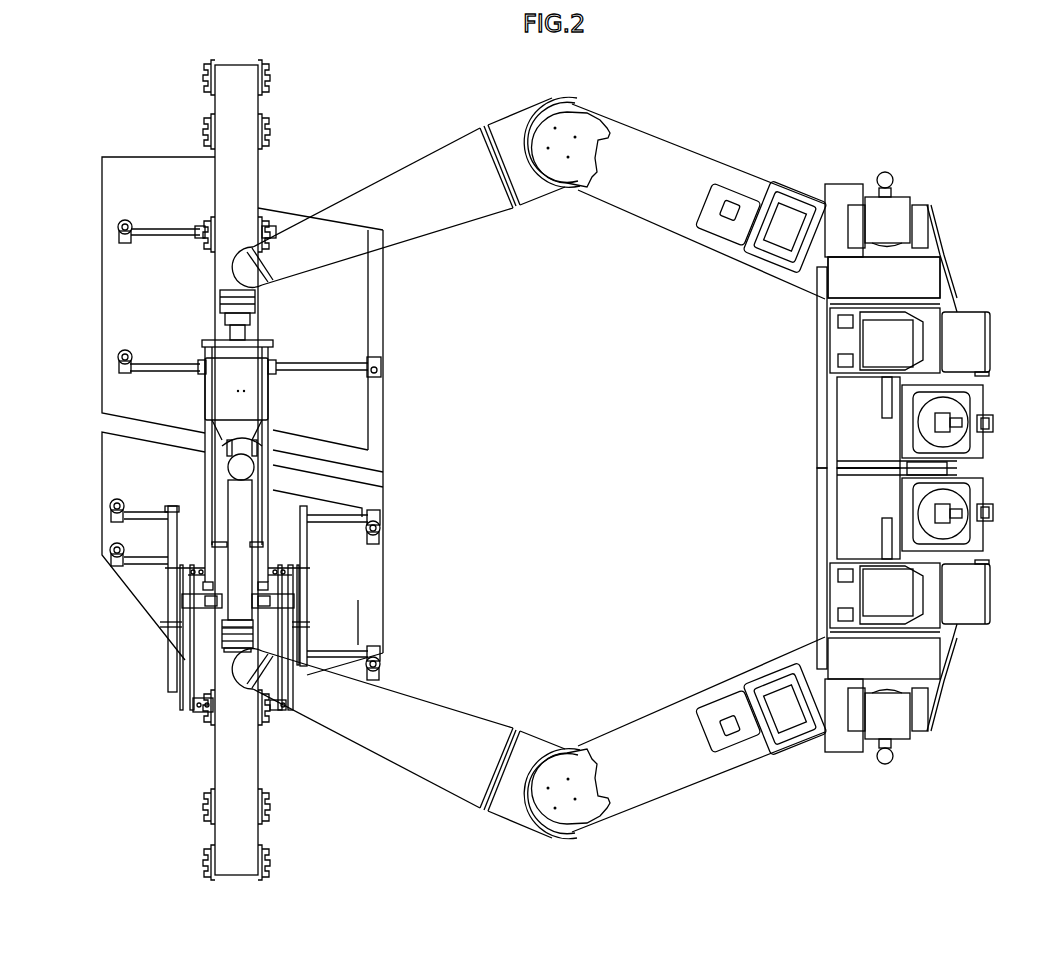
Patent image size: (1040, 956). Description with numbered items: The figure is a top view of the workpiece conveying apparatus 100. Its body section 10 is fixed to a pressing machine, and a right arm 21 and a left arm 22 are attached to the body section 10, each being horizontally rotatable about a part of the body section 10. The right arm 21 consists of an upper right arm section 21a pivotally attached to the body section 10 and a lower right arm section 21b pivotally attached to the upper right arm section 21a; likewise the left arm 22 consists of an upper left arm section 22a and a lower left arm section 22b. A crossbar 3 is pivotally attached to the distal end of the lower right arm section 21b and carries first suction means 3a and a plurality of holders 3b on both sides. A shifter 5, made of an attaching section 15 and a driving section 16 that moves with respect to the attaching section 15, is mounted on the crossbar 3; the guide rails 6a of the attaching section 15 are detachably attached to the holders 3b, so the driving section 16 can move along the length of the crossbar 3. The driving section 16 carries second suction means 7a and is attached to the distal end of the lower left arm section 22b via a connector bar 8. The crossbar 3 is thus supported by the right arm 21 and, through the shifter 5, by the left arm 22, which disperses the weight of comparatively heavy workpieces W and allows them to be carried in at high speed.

The crossbar 3 is at (248, 178).
The first suction means 3a is at (117, 220).
The holders 3b is at (205, 225).
The workpiece W is at (115, 290).
The second suction means 7a is at (107, 497).
The connector bar 8 is at (198, 597).
The shifter 5 is at (87, 653).
The attaching section 15 is at (176, 696).
The driving section 16 is at (158, 660).
The guide rails 6a is at (185, 708).
The right arm 21 is at (529, 174).
The upper right arm section 21a is at (675, 197).
The lower right arm section 21b is at (452, 158).
The left arm 22 is at (529, 764).
The upper left arm section 22a is at (675, 742).
The lower left arm section 22b is at (470, 783).
The workpiece conveying apparatus 100 is at (929, 197).
The body section 10 is at (933, 277).